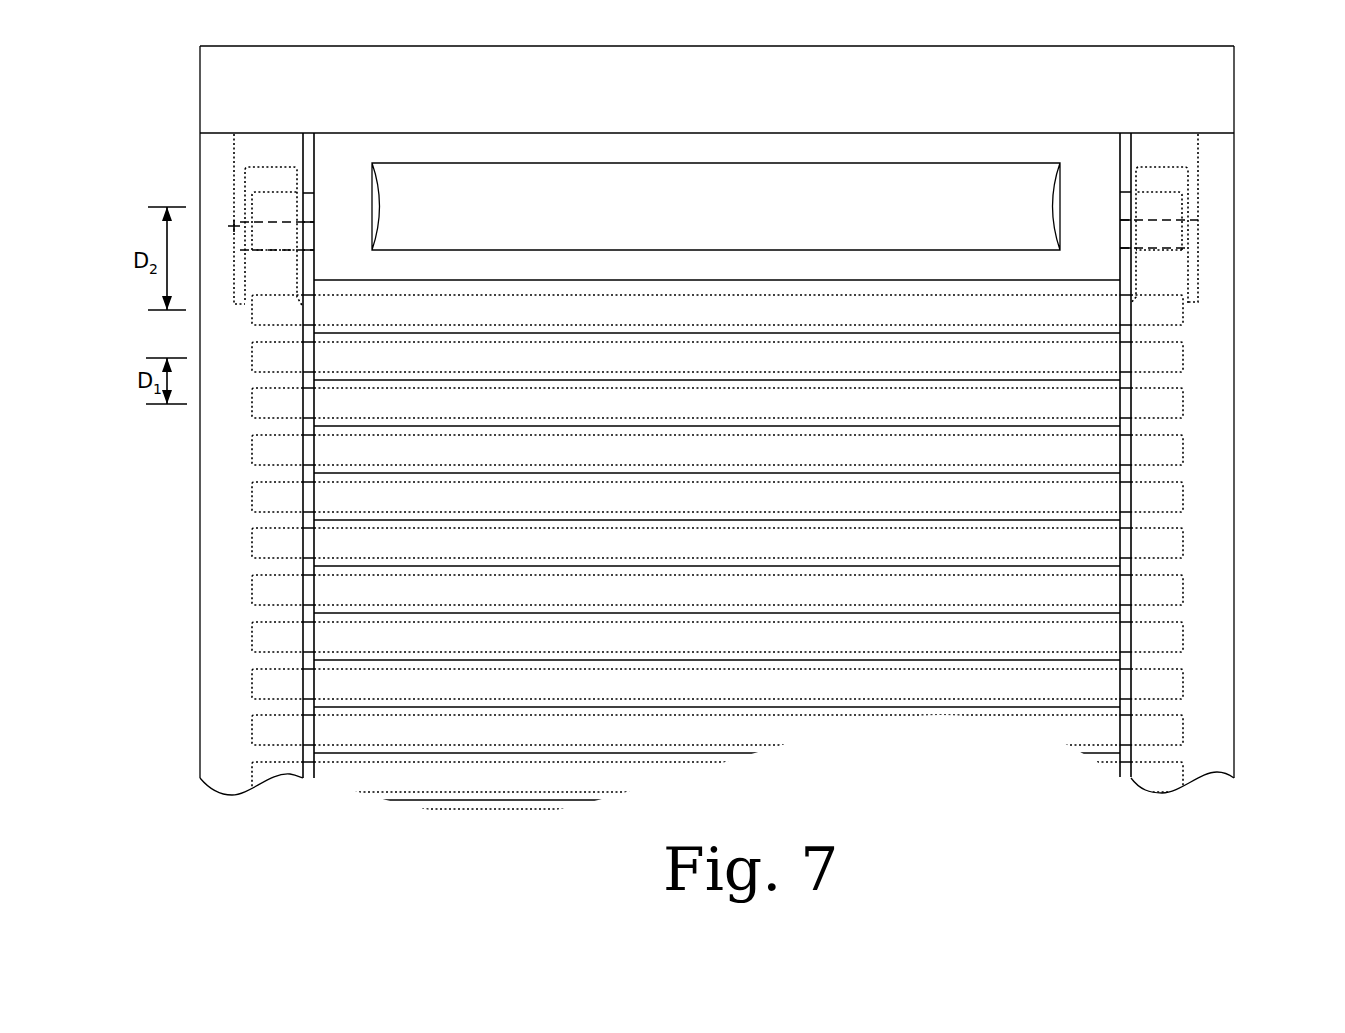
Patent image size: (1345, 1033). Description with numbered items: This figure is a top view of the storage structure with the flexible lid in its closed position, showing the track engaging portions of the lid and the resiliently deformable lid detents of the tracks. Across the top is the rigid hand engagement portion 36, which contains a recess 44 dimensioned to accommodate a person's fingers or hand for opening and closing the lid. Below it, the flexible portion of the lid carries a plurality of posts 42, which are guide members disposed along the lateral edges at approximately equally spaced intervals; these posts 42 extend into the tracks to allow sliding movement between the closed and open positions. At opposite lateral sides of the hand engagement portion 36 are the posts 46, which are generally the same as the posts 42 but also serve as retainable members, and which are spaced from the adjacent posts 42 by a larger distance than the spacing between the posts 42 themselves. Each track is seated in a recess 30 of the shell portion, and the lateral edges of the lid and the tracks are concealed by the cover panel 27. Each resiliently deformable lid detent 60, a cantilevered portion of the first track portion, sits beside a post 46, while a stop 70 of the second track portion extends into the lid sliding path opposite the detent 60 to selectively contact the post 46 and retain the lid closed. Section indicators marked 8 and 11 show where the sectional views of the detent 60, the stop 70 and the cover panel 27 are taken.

The cover panel 27 is at (1218, 63).
The recess 30 is at (257, 146).
The hand engagement portion 36 is at (1040, 152).
The recess 44 is at (752, 197).
The resiliently deformable lid detent 60 is at (268, 178).
The post 46 is at (267, 212).
The stop 70 is at (233, 227).
The post 42 is at (258, 452).
The section line 8 is at (1161, 158).
The section line 11 is at (1102, 205).